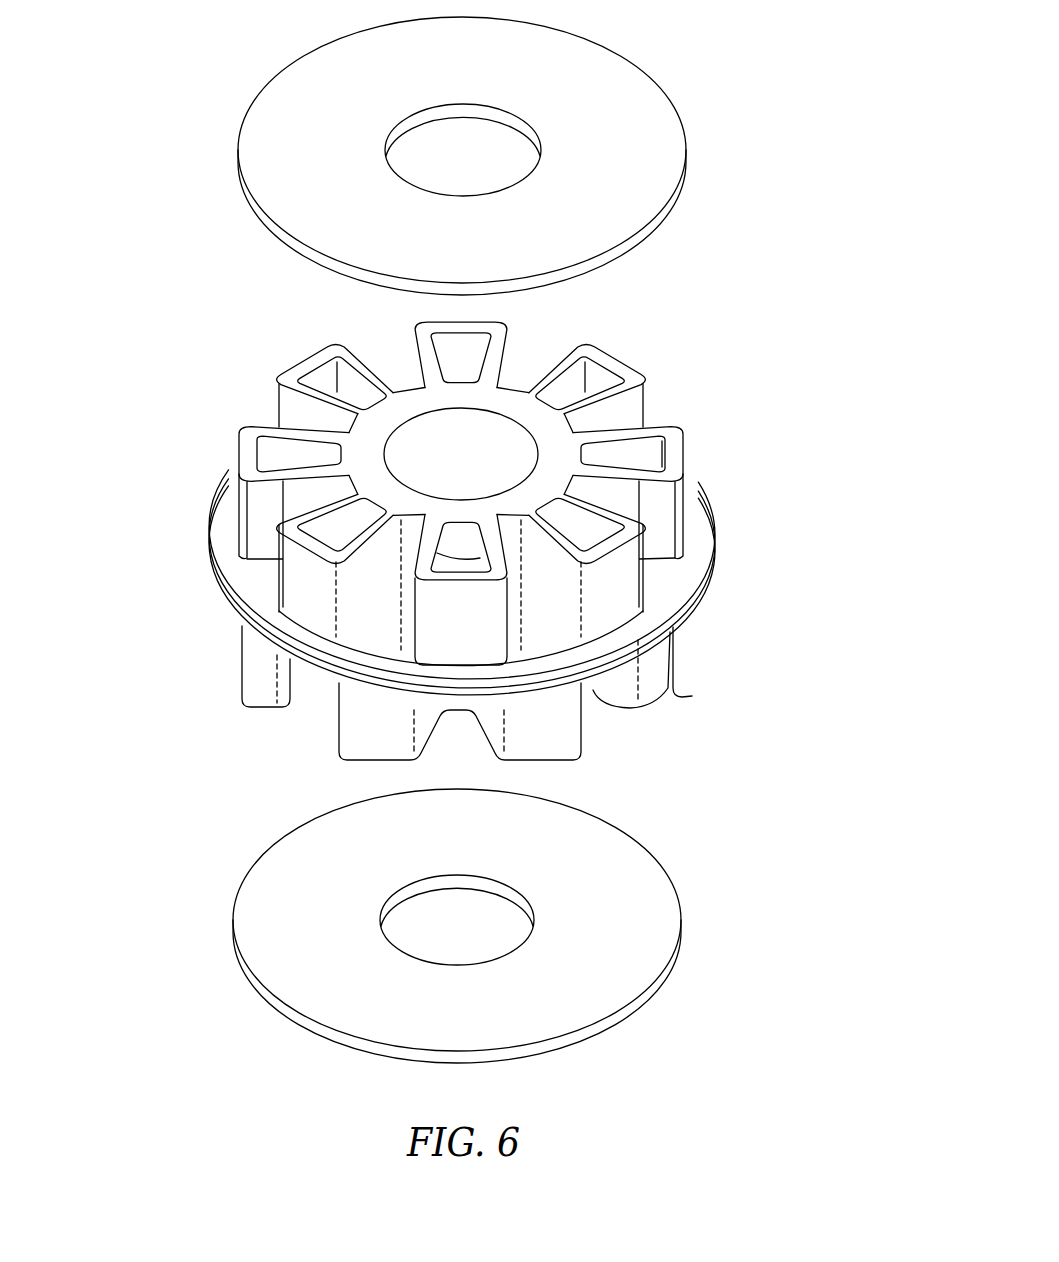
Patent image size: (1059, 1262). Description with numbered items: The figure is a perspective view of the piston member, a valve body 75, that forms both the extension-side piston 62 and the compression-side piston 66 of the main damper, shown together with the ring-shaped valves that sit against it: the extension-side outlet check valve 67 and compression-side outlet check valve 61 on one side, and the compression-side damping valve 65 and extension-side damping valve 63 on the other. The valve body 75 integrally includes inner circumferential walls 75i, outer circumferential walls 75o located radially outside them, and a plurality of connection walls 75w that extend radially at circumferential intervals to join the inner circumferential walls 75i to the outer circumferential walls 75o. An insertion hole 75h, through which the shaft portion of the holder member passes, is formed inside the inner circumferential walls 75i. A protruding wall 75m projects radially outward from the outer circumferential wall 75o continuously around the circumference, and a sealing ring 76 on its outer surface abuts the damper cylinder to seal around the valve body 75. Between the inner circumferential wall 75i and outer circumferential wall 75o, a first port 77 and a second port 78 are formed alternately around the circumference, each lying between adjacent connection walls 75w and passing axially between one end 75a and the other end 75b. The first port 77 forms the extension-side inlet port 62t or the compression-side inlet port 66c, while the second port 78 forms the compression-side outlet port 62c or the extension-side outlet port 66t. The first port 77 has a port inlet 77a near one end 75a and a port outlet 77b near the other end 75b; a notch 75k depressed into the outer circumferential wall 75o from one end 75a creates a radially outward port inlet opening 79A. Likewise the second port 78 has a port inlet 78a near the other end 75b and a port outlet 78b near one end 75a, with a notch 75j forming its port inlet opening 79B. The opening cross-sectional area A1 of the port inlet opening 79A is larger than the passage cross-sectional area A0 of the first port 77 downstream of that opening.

The extension-side outlet check valve 67 is at (464, 149).
The compression-side outlet check valve 61 is at (610, 63).
The compression-side damping valve 65 is at (496, 926).
The extension-side damping valve 63 is at (655, 880).
The valve body 75 is at (454, 553).
The extension-side piston 62 is at (454, 553).
The compression-side piston 66 is at (683, 450).
The insertion hole 75h is at (413, 437).
The inner circumferential wall 75i is at (517, 397).
The connection wall 75w is at (578, 362).
The outer circumferential wall 75o is at (622, 372).
The one end 75a is at (690, 464).
The protruding wall 75m is at (700, 528).
The other end 75b is at (672, 683).
The notch 75k is at (408, 615).
The notch 75j is at (427, 727).
The sealing ring 76 is at (700, 565).
The first port 77 is at (290, 418).
The second port 78 is at (355, 385).
The compression-side outlet port 62c is at (250, 440).
The extension-side outlet port 66t is at (250, 436).
The extension-side inlet port 62t is at (265, 550).
The compression-side inlet port 66c is at (265, 546).
The port inlet 77a is at (513, 668).
The port inlet opening 79A is at (545, 607).
The port outlet 77b is at (360, 757).
The port inlet 78a is at (584, 779).
The port inlet opening 79B is at (478, 745).
The port outlet 78b is at (448, 563).
The passage cross-sectional area A0 is at (522, 575).
The opening cross-sectional area A1 is at (560, 637).